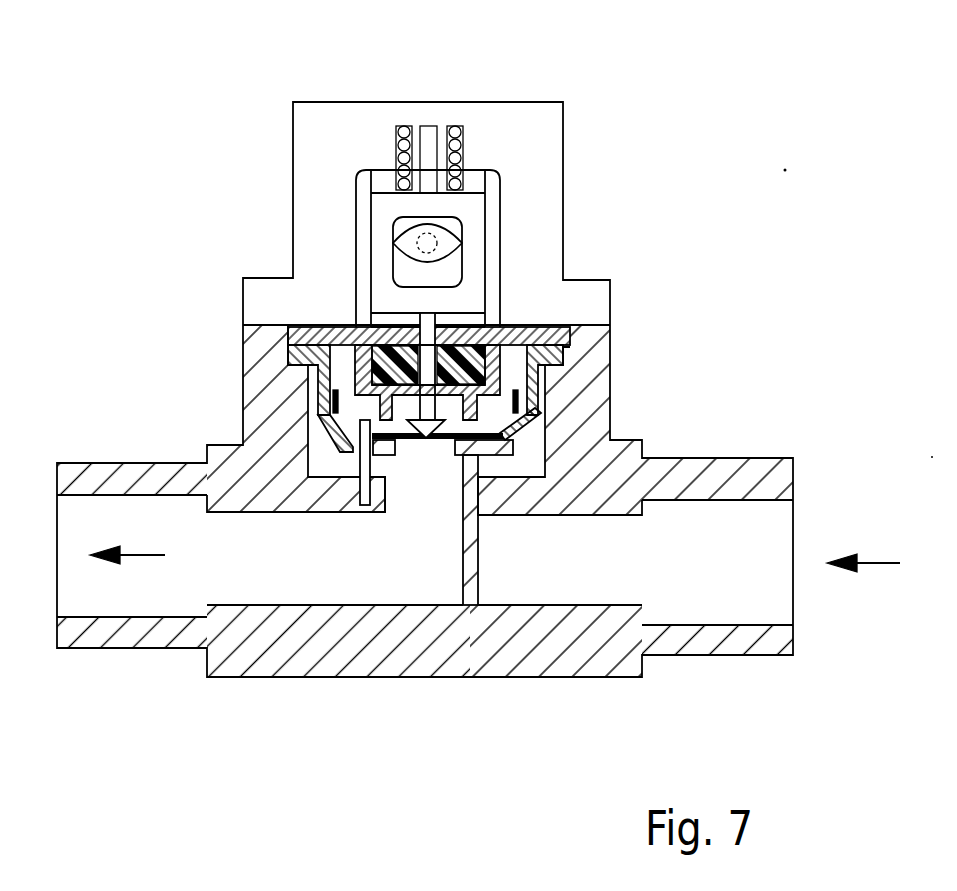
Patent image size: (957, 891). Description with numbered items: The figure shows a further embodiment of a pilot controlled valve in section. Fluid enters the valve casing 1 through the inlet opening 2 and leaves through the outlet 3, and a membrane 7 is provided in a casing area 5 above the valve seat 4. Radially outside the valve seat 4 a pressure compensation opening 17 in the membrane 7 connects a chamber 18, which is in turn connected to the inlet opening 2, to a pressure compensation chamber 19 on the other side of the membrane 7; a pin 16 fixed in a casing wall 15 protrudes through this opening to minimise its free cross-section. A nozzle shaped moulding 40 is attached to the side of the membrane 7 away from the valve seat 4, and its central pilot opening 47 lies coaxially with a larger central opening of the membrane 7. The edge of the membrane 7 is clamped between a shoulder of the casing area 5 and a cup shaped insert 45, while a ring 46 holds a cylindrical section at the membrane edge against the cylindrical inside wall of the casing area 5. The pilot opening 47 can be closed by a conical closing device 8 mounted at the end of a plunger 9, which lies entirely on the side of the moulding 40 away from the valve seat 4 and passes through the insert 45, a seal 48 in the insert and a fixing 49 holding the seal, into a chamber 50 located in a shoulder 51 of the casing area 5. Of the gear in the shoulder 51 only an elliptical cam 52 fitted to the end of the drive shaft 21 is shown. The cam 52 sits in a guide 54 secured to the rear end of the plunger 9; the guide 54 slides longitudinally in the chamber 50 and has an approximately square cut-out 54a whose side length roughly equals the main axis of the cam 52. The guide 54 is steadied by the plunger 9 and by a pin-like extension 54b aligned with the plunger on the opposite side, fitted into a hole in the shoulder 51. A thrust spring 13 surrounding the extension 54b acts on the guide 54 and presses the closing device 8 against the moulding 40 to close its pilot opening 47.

The valve casing 1 is at (675, 480).
The inlet opening 2 is at (730, 537).
The outlet pipe 3 is at (85, 480).
The valve seat 4 is at (397, 463).
The casing area 5 is at (583, 410).
The membrane 7 is at (503, 457).
The closing device 8 is at (442, 443).
The plunger 9 is at (417, 318).
The thrust spring 13 is at (398, 148).
The casing wall 15 is at (240, 495).
The pin 16 is at (363, 483).
The pressure compensation opening 17 is at (307, 505).
The chamber 18 is at (317, 436).
The pressure compensation chamber 19 is at (340, 373).
The drive shaft 21 is at (433, 253).
The nozzle shaped moulding 40 is at (575, 382).
The cup shaped insert 45 is at (300, 340).
The ring 46 is at (320, 363).
The pilot opening 47 is at (413, 442).
The seal 48 is at (470, 335).
The fixing 49 is at (372, 328).
The chamber 50 is at (473, 180).
The shoulder 51 is at (355, 118).
The elliptical cam 52 is at (392, 232).
The guide 54 is at (475, 240).
The cut-out 54a is at (467, 222).
The pin-like extension 54b is at (422, 157).